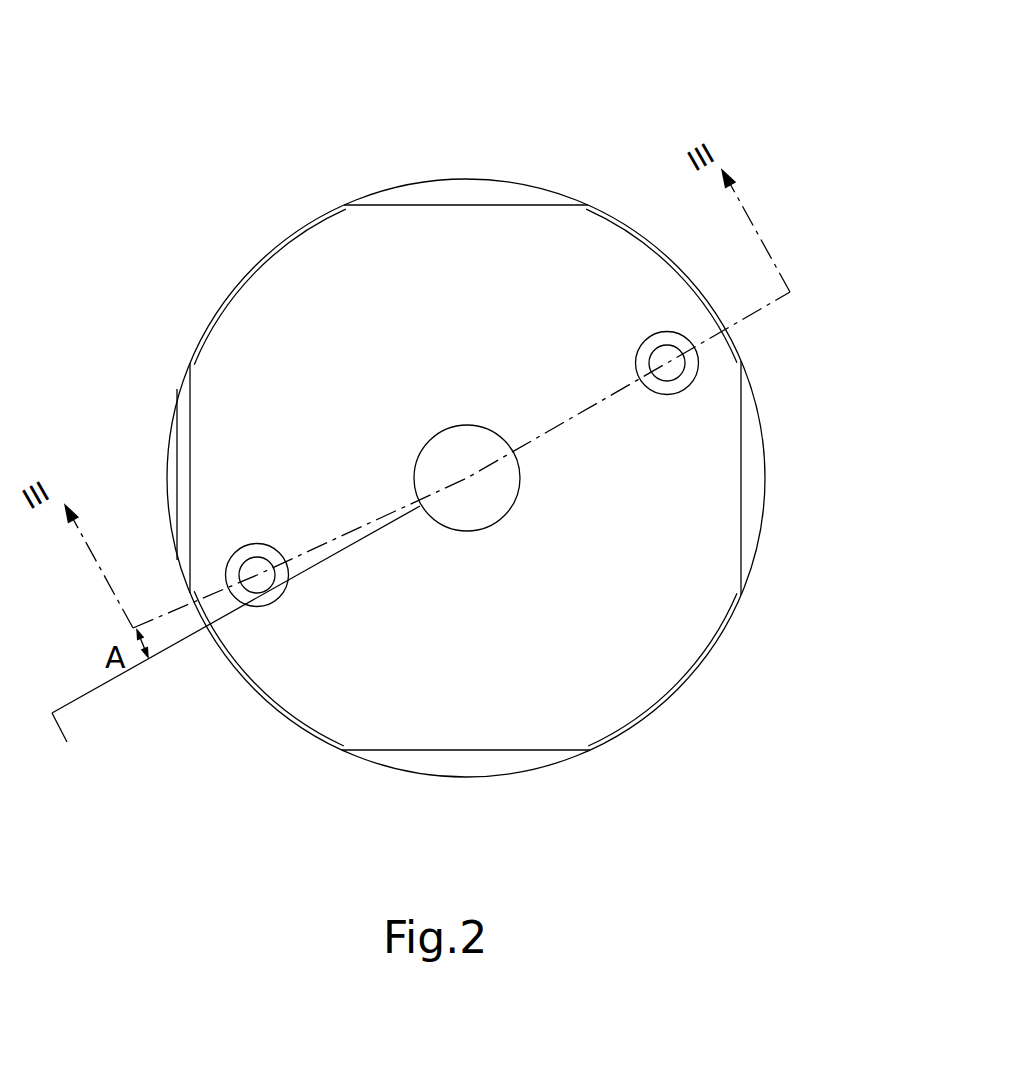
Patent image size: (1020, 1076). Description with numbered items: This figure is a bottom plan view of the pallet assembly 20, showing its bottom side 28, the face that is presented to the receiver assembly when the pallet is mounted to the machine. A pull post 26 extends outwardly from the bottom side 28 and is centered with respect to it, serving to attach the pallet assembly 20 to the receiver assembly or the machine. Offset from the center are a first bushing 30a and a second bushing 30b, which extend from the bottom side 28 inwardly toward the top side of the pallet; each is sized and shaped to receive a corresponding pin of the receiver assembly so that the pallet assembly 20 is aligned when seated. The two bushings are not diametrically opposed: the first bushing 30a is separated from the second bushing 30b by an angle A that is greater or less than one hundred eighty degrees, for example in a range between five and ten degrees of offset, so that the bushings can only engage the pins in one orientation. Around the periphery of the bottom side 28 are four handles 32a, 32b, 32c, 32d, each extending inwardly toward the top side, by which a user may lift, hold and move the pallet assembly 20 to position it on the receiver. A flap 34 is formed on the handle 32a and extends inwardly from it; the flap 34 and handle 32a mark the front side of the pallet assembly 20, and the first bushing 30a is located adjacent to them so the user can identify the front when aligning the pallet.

The pallet assembly 20 is at (682, 122).
The pull post 26 is at (484, 415).
The bottom side 28 is at (592, 297).
The first bushing 30a is at (218, 558).
The second bushing 30b is at (710, 354).
The handle 32a is at (183, 400).
The handle 32b is at (467, 200).
The handle 32c is at (746, 484).
The handle 32d is at (466, 755).
The flap 34 is at (177, 465).